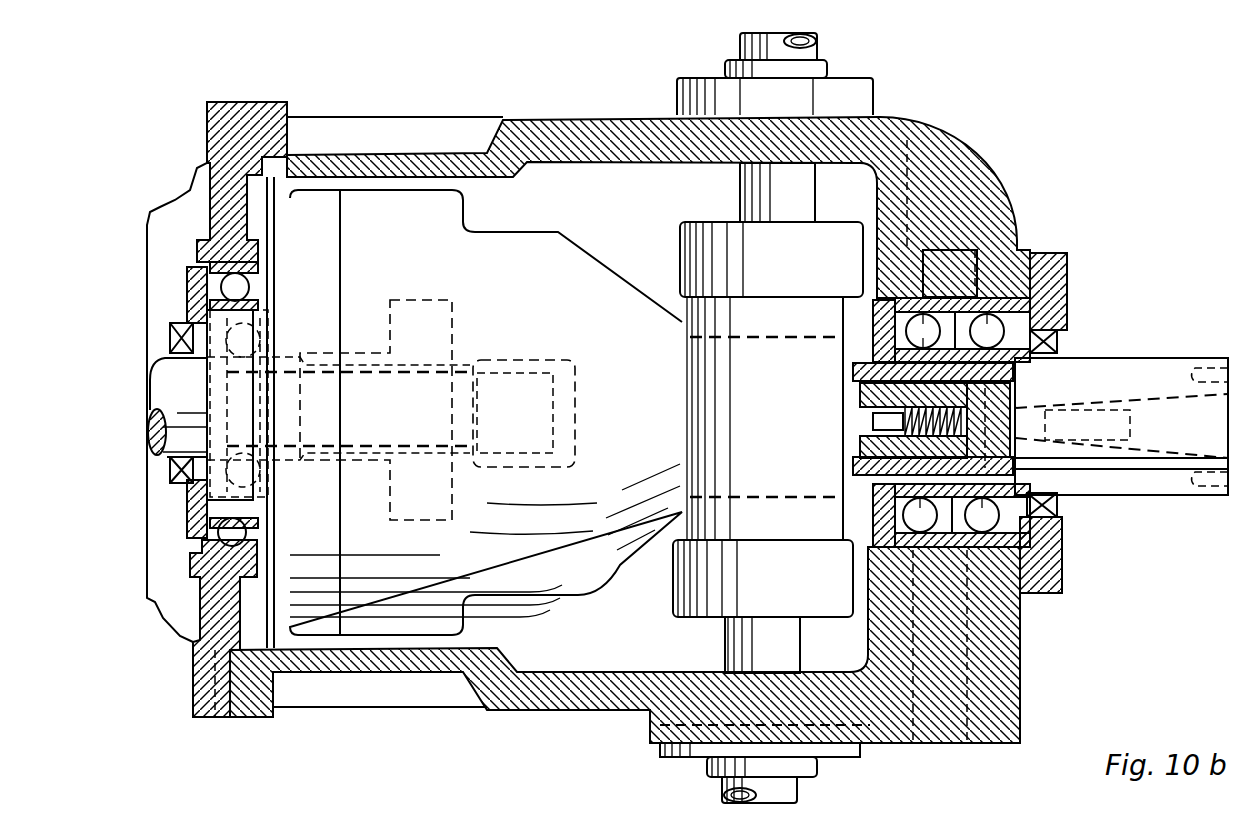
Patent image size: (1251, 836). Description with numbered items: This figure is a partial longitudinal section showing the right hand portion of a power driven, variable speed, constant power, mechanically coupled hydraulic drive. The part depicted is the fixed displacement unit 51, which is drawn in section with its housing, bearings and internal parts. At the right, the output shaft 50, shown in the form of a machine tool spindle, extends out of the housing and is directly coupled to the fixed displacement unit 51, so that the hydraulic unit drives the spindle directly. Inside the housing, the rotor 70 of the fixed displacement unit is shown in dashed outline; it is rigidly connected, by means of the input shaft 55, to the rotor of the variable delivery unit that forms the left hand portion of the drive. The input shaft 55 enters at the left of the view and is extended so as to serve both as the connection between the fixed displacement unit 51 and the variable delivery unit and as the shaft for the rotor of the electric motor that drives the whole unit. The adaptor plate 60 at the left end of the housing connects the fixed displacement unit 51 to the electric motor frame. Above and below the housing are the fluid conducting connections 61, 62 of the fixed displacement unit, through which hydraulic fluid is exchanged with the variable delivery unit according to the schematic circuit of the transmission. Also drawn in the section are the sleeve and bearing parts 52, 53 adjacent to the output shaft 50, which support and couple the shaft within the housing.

The output shaft 50 is at (1138, 366).
The fixed displacement unit 51 is at (433, 195).
The coupling sleeve 52 is at (866, 305).
The bearing assembly 53 is at (873, 335).
The input shaft 55 is at (163, 375).
The adaptor plate 60 is at (250, 173).
The fluid conducting connection 61 is at (810, 180).
The fluid conducting connection 62 is at (793, 648).
The rotor 70 is at (417, 305).